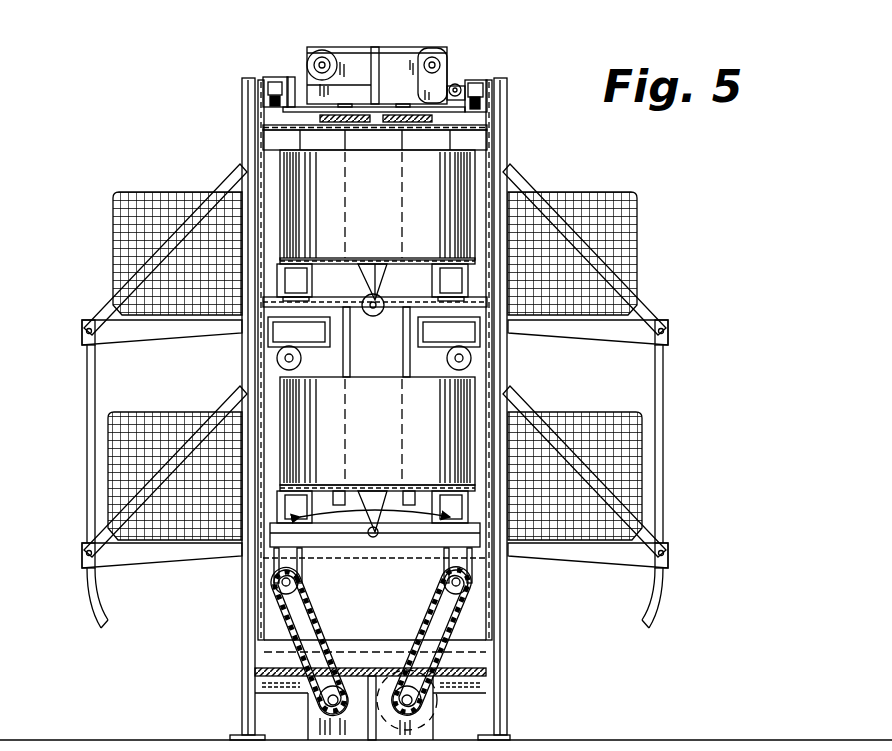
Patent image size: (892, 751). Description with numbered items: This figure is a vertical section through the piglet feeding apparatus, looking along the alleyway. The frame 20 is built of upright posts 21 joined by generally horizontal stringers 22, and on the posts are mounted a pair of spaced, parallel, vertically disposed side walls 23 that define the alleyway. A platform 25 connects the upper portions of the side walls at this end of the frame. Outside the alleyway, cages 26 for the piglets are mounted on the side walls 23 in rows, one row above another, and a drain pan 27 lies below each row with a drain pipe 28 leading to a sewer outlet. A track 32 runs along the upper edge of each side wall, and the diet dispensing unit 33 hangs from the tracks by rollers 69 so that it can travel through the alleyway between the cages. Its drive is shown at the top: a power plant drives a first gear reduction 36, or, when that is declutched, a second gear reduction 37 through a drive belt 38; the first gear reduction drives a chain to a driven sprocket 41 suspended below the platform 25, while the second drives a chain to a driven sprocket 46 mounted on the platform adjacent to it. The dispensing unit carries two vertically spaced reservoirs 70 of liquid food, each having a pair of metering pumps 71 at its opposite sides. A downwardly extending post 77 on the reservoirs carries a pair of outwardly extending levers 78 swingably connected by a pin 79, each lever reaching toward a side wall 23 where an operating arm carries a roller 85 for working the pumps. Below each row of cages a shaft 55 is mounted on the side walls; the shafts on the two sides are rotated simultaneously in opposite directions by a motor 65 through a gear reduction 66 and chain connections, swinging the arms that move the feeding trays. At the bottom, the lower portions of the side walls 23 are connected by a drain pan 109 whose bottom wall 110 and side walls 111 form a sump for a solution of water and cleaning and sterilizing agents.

The frame 20 is at (510, 136).
The upright posts 21 is at (241, 610).
The stringers 22 is at (492, 92).
The side walls 23 is at (508, 165).
The platform 25 is at (295, 77).
The cages 26 is at (118, 190).
The drain pan 27 is at (100, 327).
The drain pipe 28 is at (86, 400).
The track 32 is at (265, 98).
The diet dispensing unit 33 is at (292, 183).
The first gear reduction 36 is at (428, 47).
The second gear reduction 37 is at (325, 49).
The drive belt 38 is at (375, 47).
The driven sprocket 41 is at (396, 150).
The driven sprocket 46 is at (326, 150).
The shaft 55 is at (277, 358).
The motor 65 is at (433, 700).
The gear reduction 66 is at (318, 720).
The rollers 69 is at (268, 105).
The reservoirs 70 is at (387, 209).
The metering pumps 71 is at (302, 266).
The post 77 is at (378, 264).
The levers 78 is at (376, 308).
The pin 79 is at (375, 337).
The roller 85 is at (233, 574).
The drain pan 109 is at (275, 645).
The bottom wall 110 is at (492, 666).
The side walls 111 is at (492, 617).